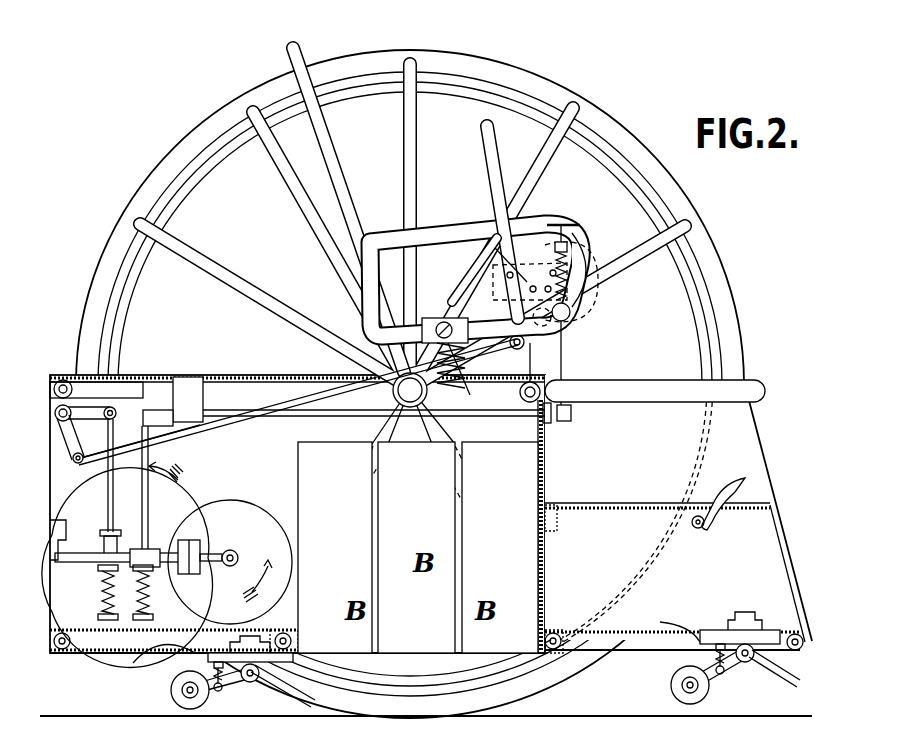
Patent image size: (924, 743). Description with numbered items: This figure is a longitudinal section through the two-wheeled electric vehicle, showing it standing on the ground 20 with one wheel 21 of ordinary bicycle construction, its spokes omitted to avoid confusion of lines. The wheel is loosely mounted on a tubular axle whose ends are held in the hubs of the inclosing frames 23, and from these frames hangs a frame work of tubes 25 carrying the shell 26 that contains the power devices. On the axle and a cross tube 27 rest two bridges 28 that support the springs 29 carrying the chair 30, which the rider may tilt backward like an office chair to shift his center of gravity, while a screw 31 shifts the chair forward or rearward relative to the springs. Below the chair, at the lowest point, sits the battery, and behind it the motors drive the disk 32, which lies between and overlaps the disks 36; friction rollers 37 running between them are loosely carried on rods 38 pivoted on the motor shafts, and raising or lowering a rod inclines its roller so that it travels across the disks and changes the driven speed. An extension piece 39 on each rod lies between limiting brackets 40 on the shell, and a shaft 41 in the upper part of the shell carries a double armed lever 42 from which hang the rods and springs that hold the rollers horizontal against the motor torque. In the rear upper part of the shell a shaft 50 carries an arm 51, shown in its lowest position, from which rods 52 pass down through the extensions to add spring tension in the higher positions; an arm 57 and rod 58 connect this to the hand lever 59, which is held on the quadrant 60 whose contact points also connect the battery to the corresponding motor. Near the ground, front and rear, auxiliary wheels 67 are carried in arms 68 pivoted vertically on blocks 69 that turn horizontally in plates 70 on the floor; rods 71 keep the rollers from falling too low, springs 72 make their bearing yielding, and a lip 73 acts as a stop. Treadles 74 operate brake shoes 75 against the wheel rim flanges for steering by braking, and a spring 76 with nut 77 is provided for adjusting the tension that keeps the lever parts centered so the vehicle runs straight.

The ground 20 is at (426, 700).
The wheel 21 is at (535, 694).
The inclosing frame 23 is at (660, 402).
The tube 25 is at (62, 650).
The shell 26 is at (50, 607).
The cross tube 27 is at (543, 390).
The bridge 28 is at (498, 403).
The spring 29 is at (470, 373).
The chair 30 is at (323, 131).
The screw 31 is at (443, 318).
The disk 32 is at (167, 568).
The disk 36 is at (164, 489).
The friction roller 37 is at (195, 540).
The rod 38 is at (218, 567).
The extension piece 39 is at (96, 555).
The limiting bracket 40 is at (52, 530).
The shaft 41 is at (292, 412).
The double armed lever 42 is at (126, 401).
The shaft 50 is at (57, 414).
The arm 51 is at (90, 410).
The rod 52 is at (107, 470).
The arm 57 is at (70, 441).
The rod 58 is at (186, 424).
The hand lever 59 is at (492, 187).
The quadrant 60 is at (485, 283).
The auxiliary wheel 67 is at (171, 691).
The arm 68 is at (253, 683).
The block 69 is at (272, 673).
The plate 70 is at (225, 655).
The rod 71 is at (220, 693).
The spring 72 is at (215, 680).
The lip 73 is at (408, 645).
The treadle 74 is at (748, 487).
The brake shoe 75 is at (695, 530).
The spring 76 is at (568, 268).
The nut 77 is at (566, 251).